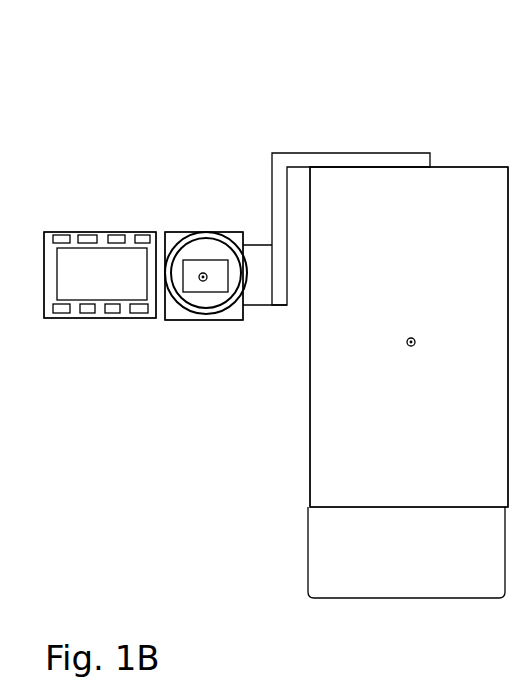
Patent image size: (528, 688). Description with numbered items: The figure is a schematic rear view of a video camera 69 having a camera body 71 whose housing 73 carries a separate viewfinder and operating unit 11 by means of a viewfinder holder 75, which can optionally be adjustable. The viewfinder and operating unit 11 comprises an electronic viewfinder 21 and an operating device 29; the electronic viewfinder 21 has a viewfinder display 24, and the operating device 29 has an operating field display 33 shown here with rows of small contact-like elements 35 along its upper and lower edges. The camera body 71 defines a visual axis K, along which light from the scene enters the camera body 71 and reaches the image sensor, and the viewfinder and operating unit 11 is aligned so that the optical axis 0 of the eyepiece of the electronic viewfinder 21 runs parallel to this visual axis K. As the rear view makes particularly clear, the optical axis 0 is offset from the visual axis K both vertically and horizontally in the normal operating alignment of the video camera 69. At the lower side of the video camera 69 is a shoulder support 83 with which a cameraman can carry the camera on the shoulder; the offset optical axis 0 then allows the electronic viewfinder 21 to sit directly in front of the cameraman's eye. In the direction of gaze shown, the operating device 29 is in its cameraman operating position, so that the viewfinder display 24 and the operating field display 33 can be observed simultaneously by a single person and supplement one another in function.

The viewfinder and operating unit 11 is at (146, 183).
The operating device 29 is at (73, 229).
The operating field display 33 is at (114, 284).
The contact pins 35 is at (88, 315).
The electronic viewfinder 21 is at (181, 240).
The viewfinder display 24 is at (193, 283).
The optical axis 0 is at (208, 281).
The viewfinder holder 75 is at (302, 160).
The camera body 71 is at (447, 130).
The housing 73 is at (417, 441).
The visual axis K is at (416, 346).
The shoulder support 83 is at (358, 548).
The video camera 69 is at (272, 93).